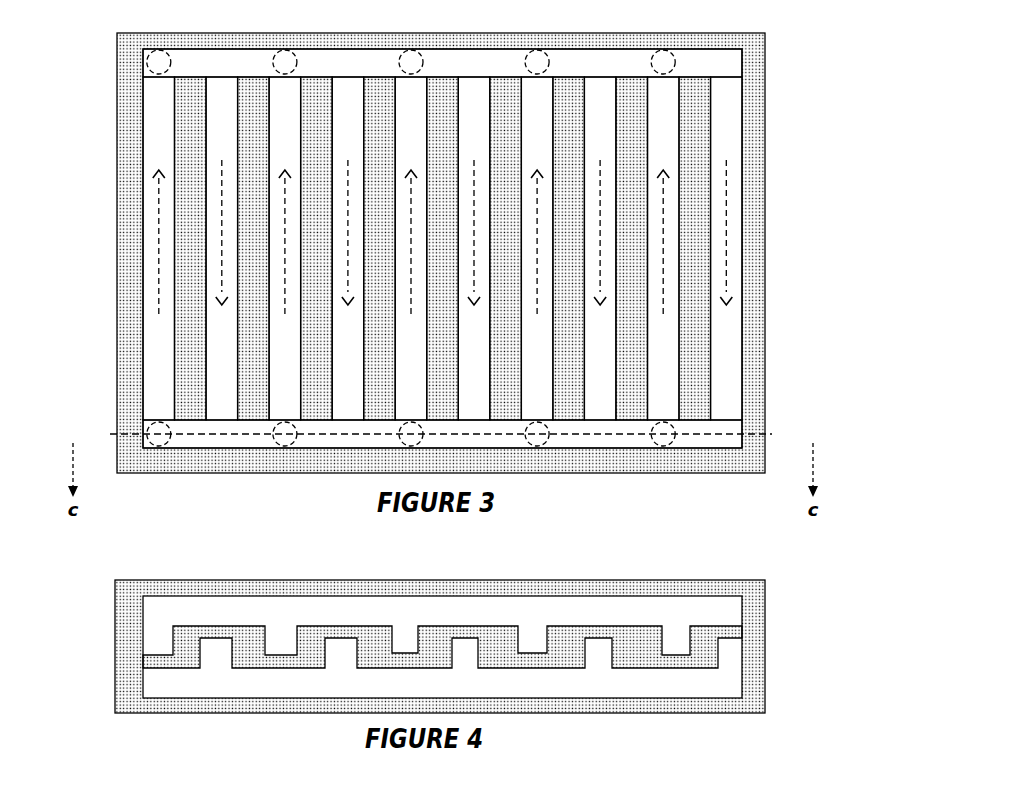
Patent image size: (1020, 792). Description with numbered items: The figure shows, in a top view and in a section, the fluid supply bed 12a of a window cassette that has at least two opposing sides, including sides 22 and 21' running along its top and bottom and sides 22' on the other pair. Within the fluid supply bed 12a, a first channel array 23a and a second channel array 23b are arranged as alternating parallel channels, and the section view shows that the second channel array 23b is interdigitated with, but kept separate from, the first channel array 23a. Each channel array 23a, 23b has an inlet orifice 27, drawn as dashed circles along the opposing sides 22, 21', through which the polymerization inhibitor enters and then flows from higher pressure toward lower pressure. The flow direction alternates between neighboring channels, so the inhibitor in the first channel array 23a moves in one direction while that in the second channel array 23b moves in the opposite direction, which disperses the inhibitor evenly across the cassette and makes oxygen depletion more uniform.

In FIG. 3, the fluid supply bed 12a is at (762, 122).
In FIG. 4, the fluid supply bed 12a is at (760, 625).
In FIG. 3, the opposing side 21' is at (441, 475).
In FIG. 4, the opposing side 21' is at (559, 579).
In FIG. 3, the opposing side 22 is at (442, 38).
In FIG. 4, the opposing side 22' is at (530, 719).
In FIG. 3, the first channel array 23a is at (290, 150).
In FIG. 4, the first channel array 23a is at (403, 642).
In FIG. 3, the second channel array 23b is at (605, 394).
In FIG. 4, the second channel array 23b is at (343, 647).
In FIG. 3, the inlet orifice 27 is at (622, 7).